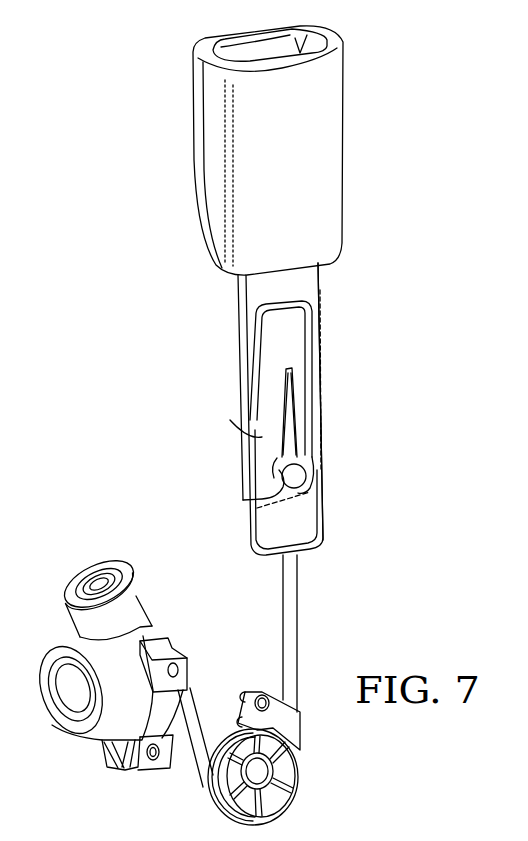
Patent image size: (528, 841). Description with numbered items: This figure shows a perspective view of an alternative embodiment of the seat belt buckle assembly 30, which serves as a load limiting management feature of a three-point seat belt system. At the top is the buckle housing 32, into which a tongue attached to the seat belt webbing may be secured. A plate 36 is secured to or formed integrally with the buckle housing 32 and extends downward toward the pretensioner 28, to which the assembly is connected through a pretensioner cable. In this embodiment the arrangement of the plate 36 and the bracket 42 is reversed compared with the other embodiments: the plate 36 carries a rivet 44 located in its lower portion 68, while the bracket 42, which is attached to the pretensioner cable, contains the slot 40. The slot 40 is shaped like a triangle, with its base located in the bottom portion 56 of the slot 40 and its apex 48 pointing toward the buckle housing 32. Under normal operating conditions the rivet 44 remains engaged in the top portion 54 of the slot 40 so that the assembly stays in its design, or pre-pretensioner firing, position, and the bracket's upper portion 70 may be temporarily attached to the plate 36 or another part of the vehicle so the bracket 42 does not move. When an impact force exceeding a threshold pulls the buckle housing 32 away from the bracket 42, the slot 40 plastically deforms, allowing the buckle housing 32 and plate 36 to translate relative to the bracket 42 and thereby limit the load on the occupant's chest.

The pretensioner 28 is at (168, 639).
The seat belt buckle assembly 30 is at (358, 90).
The buckle housing 32 is at (196, 178).
The plate 36 is at (318, 292).
The slot 40 is at (230, 420).
The bracket 42 is at (318, 428).
The rivet 44 is at (306, 487).
The apex 48 is at (291, 366).
The top portion 54 is at (286, 369).
The bottom portion 56 is at (243, 500).
The lower portion 68 is at (313, 463).
The upper portion 70 is at (288, 325).